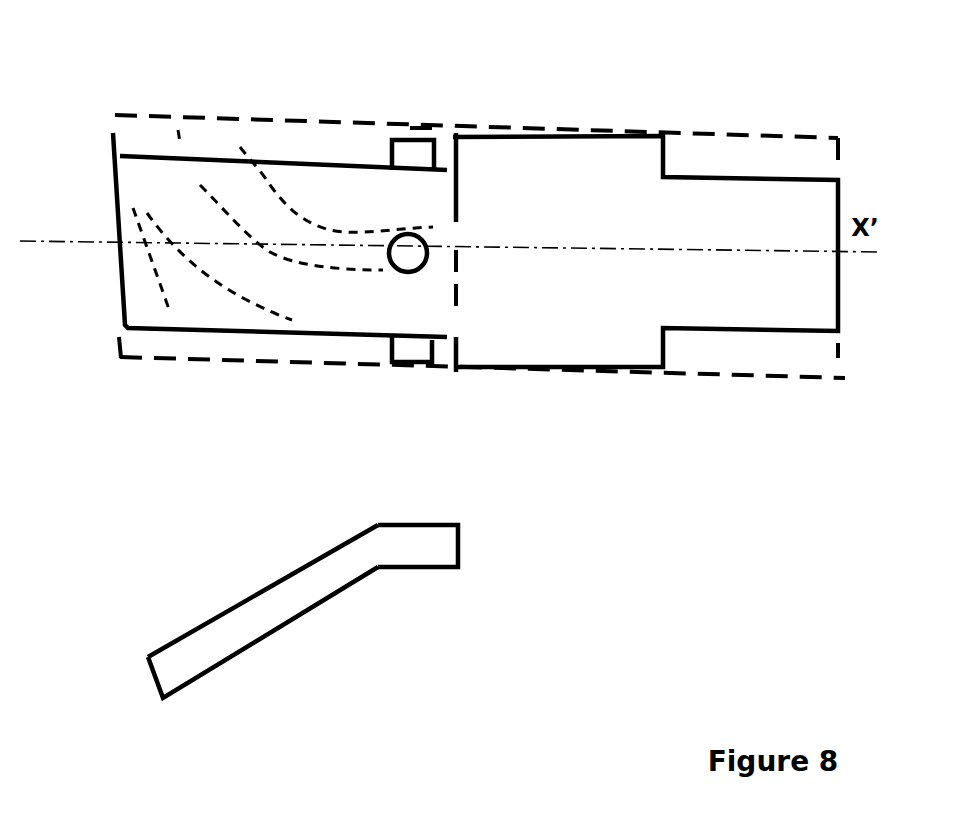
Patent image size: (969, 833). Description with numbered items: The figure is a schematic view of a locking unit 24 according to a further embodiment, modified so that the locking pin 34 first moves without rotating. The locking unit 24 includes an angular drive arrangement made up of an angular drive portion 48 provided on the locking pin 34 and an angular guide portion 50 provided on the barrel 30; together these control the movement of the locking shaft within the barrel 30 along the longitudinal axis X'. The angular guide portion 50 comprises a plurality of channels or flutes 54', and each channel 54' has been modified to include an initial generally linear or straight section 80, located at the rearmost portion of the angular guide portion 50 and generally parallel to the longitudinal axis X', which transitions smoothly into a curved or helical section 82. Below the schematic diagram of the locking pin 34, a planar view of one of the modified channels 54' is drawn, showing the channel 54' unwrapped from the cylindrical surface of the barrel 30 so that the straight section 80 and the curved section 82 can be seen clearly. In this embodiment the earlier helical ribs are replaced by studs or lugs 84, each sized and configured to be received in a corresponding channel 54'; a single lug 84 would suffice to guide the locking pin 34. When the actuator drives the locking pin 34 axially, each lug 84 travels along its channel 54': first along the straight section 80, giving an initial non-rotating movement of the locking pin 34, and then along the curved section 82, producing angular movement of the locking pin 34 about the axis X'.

The locking unit 24 is at (613, 420).
The barrel 30 is at (722, 140).
The locking pin 34 is at (517, 162).
The angular drive portion 48 is at (313, 190).
The angular guide portion 50 is at (295, 242).
The channel 54' is at (304, 276).
The straight section 80 is at (378, 572).
The curved section 82 is at (378, 523).
The lug 84 is at (410, 243).